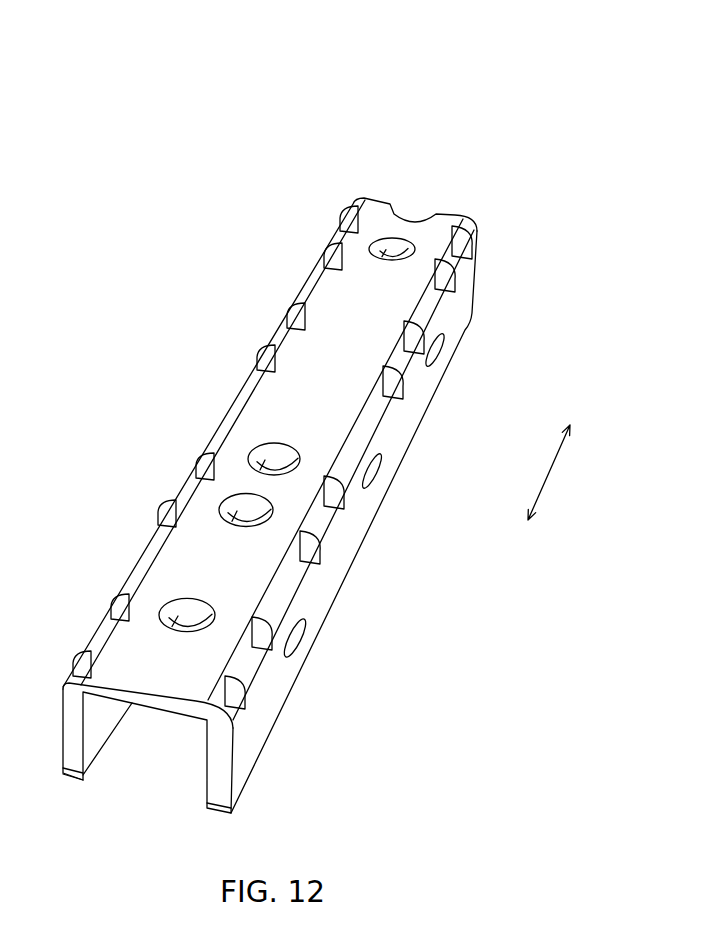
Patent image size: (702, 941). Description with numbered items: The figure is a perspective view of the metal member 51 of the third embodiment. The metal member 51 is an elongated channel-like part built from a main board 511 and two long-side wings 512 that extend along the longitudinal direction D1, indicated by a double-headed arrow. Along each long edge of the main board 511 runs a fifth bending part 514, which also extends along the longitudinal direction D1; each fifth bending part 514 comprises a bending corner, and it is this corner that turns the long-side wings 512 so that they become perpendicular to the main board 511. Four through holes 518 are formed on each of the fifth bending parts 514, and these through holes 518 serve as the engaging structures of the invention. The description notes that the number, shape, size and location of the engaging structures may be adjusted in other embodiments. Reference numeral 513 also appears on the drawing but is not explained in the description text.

The metal member 51 is at (301, 416).
The main board 511 is at (325, 305).
The long-side wings 512 is at (364, 519).
The front end plate 513 is at (162, 700).
The fifth bending parts 514 is at (425, 313).
The through holes 518 is at (340, 240).
The longitudinal direction D1 is at (542, 472).